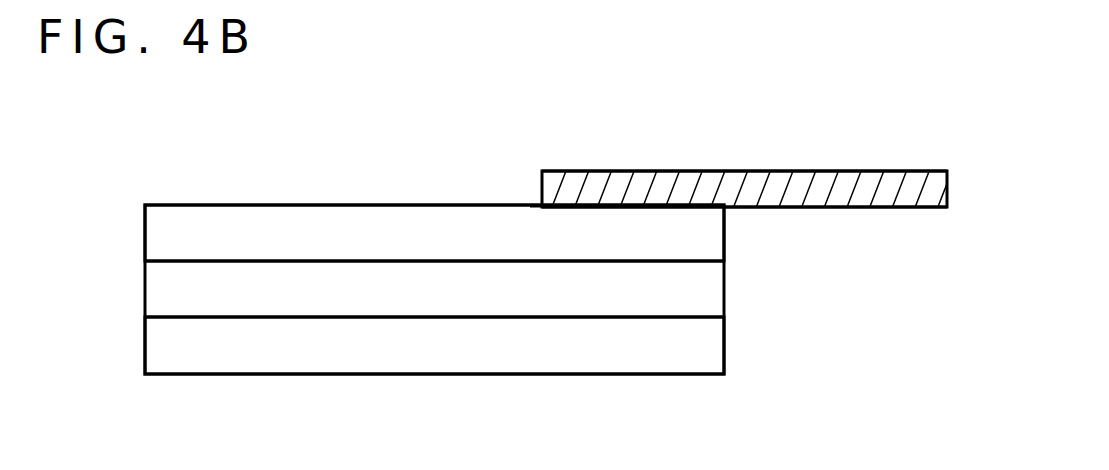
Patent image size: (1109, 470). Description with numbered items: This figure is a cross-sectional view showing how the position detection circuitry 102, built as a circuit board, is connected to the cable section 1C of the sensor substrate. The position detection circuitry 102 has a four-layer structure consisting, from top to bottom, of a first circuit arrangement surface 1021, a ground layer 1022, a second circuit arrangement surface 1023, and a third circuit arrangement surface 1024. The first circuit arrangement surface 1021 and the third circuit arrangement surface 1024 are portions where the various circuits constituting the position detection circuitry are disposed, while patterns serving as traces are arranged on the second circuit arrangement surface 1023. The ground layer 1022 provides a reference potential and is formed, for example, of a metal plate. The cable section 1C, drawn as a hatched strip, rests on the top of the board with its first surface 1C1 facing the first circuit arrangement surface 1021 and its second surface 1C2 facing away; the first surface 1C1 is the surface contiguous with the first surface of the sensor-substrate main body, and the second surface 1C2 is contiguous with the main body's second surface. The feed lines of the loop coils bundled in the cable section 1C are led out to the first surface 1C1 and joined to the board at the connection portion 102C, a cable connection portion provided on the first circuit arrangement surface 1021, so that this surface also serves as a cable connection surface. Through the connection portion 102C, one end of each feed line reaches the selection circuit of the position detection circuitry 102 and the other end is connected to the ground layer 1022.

The position detection circuitry 102 is at (363, 150).
The first circuit arrangement surface 1021 is at (216, 203).
The ground layer 1022 is at (668, 266).
The second circuit arrangement surface 1023 is at (177, 314).
The third circuit arrangement surface 1024 is at (322, 375).
The connection portion 102C is at (554, 207).
The cable section 1C is at (832, 162).
The first surface of the cable section 1C1 is at (860, 209).
The second surface of the cable section 1C2 is at (624, 170).